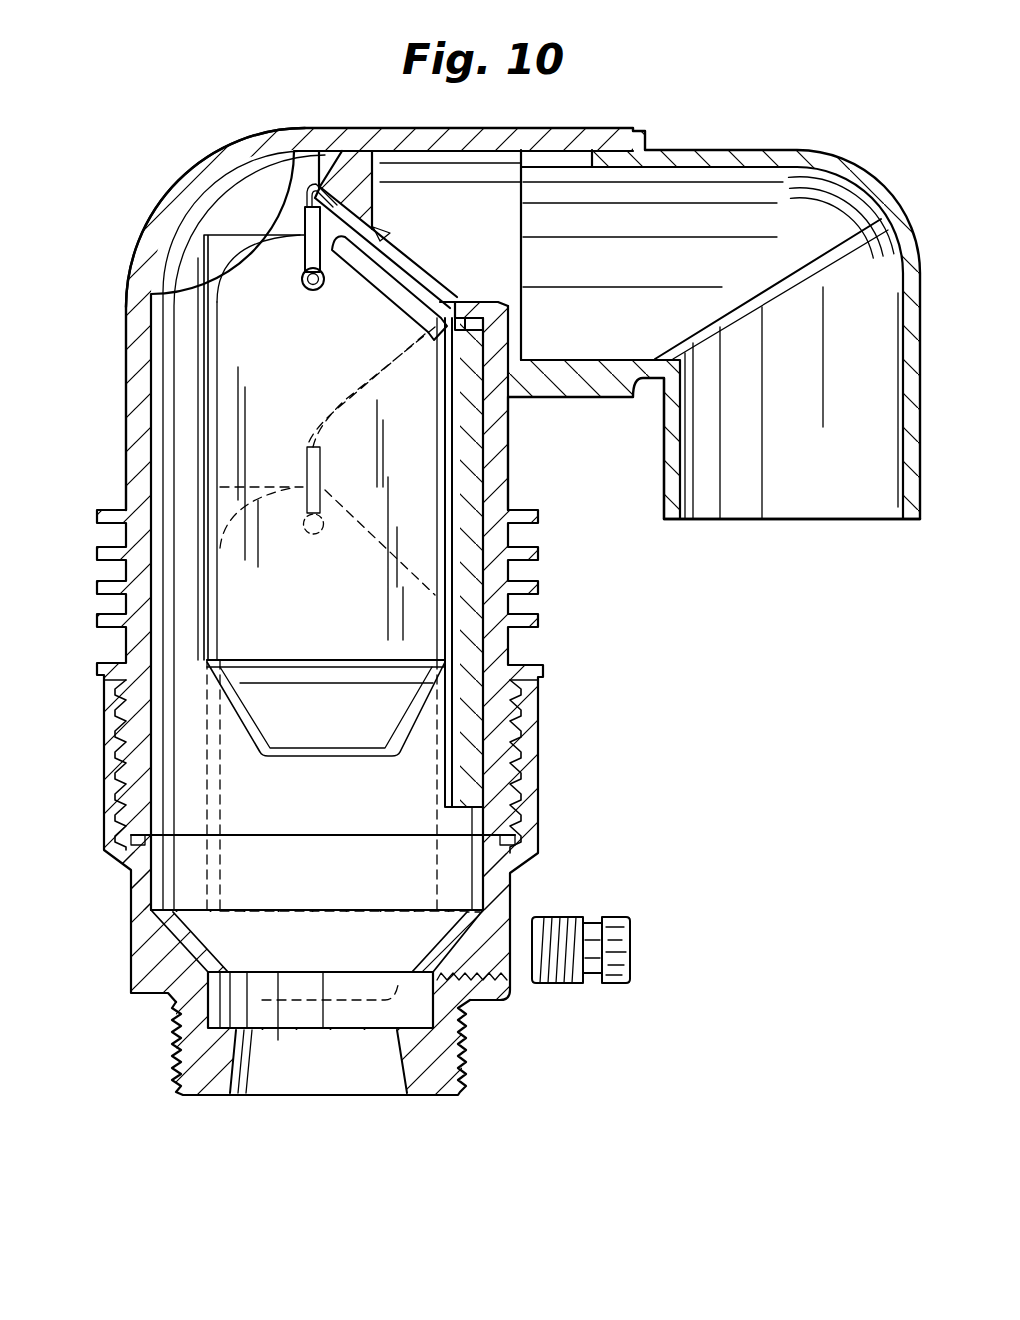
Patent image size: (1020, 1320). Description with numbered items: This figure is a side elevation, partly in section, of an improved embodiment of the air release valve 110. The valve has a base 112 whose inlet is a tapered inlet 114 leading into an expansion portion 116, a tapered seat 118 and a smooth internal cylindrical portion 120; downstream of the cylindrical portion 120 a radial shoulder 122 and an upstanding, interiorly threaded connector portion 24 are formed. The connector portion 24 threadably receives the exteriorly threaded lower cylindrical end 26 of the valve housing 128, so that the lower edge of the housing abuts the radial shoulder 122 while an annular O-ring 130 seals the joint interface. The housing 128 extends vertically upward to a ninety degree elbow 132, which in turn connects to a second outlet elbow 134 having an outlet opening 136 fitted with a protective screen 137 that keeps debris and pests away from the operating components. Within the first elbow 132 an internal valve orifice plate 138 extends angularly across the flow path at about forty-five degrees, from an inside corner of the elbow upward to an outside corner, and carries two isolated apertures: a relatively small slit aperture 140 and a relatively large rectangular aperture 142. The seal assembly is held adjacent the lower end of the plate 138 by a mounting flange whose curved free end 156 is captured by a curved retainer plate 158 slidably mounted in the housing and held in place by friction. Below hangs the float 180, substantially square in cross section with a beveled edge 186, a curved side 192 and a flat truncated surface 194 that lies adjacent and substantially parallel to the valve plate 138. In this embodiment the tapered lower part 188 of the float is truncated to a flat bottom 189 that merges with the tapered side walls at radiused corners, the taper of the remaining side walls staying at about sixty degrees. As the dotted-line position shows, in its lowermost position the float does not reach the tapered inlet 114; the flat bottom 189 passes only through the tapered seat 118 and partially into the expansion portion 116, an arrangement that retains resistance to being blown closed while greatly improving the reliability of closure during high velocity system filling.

The air release valve 110 is at (770, 100).
The base 112 is at (124, 935).
The tapered inlet 114 is at (388, 1080).
The expansion portion 116 is at (420, 1008).
The tapered seat 118 is at (200, 960).
The cylindrical portion 120 is at (478, 876).
The radial shoulder 122 is at (150, 833).
The valve housing 128 is at (124, 460).
The O-ring 130 is at (513, 853).
The elbow 132 is at (249, 150).
The outlet elbow 134 is at (848, 168).
The outlet opening 136 is at (857, 503).
The protective screen 137 is at (784, 283).
The valve orifice plate 138 is at (420, 251).
The aperture 140 is at (350, 204).
The aperture 142 is at (428, 282).
The curved free end 156 is at (467, 325).
The curved retainer plate 158 is at (473, 537).
The float 180 is at (292, 353).
The beveled edge 186 is at (214, 609).
The tapered lower part 188 is at (378, 735).
The flat bottom 189 is at (302, 752).
The curved side 192 is at (233, 273).
The flat truncated surface 194 is at (378, 297).
The connector portion 24 is at (113, 720).
The lower cylindrical end 26 is at (143, 743).